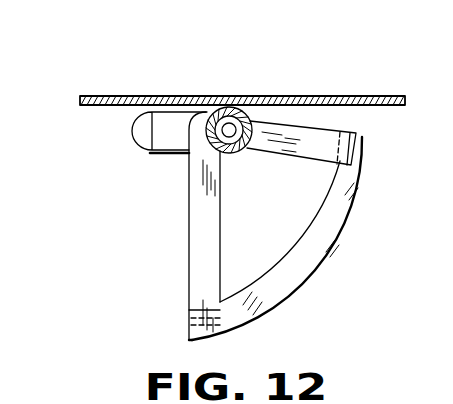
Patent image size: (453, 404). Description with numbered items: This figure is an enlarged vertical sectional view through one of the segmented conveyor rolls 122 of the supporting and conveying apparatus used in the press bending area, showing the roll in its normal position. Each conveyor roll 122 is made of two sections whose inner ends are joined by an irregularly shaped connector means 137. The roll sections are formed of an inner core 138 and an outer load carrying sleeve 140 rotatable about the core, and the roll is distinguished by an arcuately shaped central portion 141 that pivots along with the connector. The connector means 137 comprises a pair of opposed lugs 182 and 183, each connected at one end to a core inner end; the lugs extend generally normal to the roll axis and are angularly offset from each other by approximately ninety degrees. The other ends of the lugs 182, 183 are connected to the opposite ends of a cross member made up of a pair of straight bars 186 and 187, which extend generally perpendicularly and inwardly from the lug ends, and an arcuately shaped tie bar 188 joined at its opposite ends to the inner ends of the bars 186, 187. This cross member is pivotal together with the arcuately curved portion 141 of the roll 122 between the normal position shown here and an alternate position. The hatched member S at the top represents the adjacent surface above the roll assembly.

The support surface S is at (315, 99).
The outer load carrying sleeve 140 is at (213, 150).
The arcuately shaped central portion 141 is at (152, 130).
The conveyor roll 122 is at (135, 153).
The inner core 138 is at (213, 150).
The lug 183 is at (198, 238).
The straight bar 187 is at (190, 317).
The lug 182 is at (283, 143).
The straight bar 186 is at (363, 143).
The connector means 137 is at (330, 270).
The arcuately shaped tie bar 188 is at (343, 215).